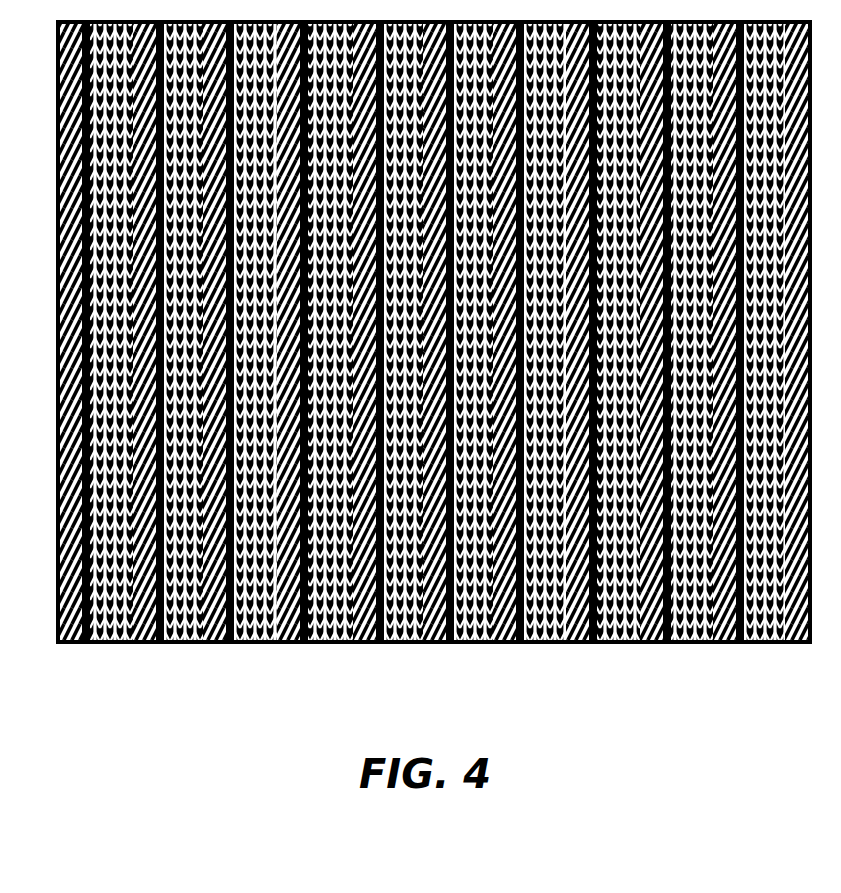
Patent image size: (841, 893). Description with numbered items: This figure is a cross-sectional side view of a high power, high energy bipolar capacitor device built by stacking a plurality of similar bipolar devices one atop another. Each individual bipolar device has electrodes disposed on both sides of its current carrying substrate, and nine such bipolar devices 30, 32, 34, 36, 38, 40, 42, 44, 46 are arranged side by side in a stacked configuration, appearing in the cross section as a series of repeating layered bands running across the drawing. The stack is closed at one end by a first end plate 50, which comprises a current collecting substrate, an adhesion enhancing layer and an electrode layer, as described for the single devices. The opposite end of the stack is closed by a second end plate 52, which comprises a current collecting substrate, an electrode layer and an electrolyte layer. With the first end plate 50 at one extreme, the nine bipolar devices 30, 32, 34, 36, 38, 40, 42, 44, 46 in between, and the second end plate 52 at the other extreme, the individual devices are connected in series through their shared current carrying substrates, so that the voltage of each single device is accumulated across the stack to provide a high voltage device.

The first end plate 50 is at (433, 359).
The bipolar device 30 is at (434, 359).
The bipolar device 32 is at (434, 359).
The bipolar device 34 is at (434, 359).
The bipolar device 36 is at (434, 359).
The bipolar device 38 is at (434, 359).
The bipolar device 40 is at (434, 359).
The bipolar device 42 is at (434, 359).
The bipolar device 44 is at (434, 359).
The bipolar device 46 is at (434, 359).
The second end plate 52 is at (434, 359).